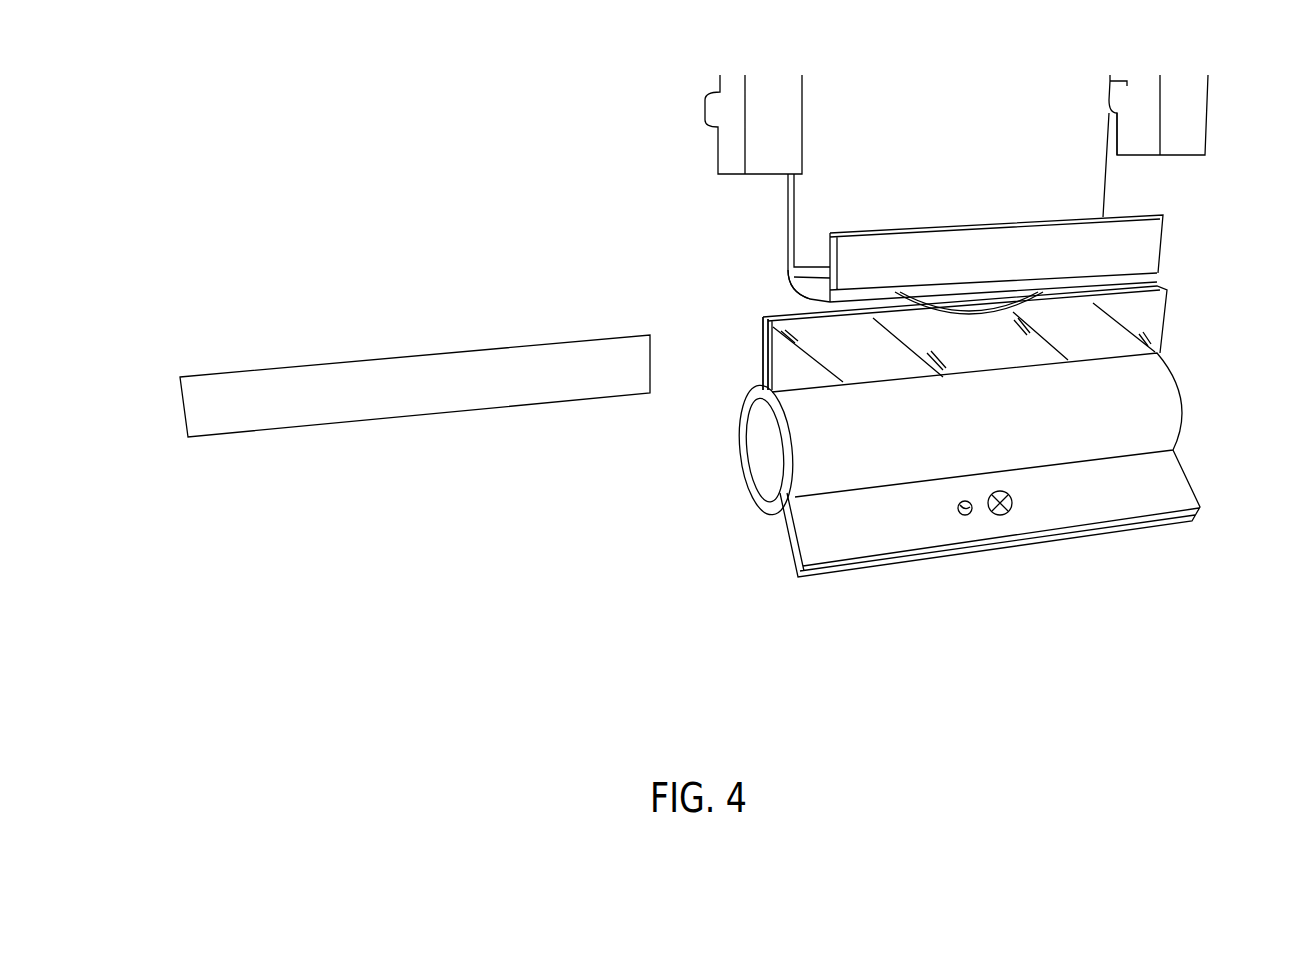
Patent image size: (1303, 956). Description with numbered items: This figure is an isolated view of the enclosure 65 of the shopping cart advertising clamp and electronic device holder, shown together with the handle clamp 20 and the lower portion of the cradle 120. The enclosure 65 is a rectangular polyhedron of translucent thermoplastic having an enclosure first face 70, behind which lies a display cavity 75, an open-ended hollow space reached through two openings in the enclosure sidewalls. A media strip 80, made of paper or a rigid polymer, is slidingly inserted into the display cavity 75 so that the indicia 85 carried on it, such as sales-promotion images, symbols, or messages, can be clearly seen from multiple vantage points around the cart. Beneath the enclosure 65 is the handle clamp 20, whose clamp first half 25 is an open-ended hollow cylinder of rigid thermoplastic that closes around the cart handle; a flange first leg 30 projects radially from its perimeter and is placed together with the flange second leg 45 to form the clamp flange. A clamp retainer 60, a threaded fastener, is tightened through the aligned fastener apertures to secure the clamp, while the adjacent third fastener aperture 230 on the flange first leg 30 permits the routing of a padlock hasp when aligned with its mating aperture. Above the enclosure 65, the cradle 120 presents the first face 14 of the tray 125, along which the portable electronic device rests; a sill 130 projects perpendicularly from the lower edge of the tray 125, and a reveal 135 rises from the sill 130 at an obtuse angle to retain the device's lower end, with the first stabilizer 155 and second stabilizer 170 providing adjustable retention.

The first face 14 is at (1072, 182).
The handle clamp 20 is at (728, 524).
The clamp first half 25 is at (1170, 400).
The flange first leg 30 is at (867, 527).
The flange second leg 45 is at (788, 548).
The clamp retainer 60 is at (1011, 508).
The enclosure 65 is at (568, 308).
The enclosure first face 70 is at (1150, 327).
The display cavity 75 is at (763, 353).
The media strip 80 is at (260, 422).
The indicia 85 is at (359, 372).
The cradle 120 is at (690, 193).
The tray 125 is at (806, 200).
The sill 130 is at (818, 282).
The reveal 135 is at (1142, 242).
The first stabilizer 155 is at (1197, 103).
The second stabilizer 170 is at (728, 157).
The third fastener aperture 230 is at (968, 513).